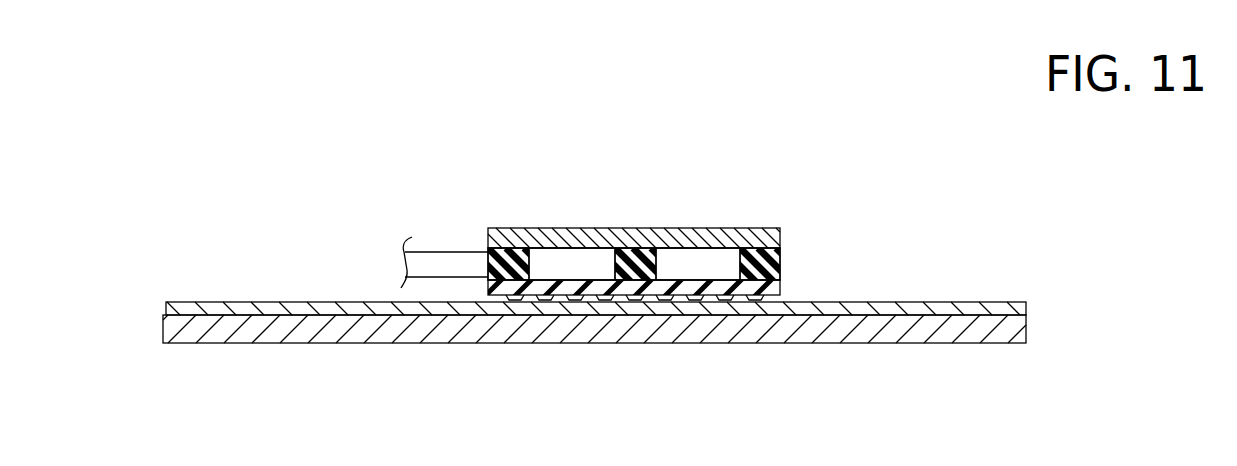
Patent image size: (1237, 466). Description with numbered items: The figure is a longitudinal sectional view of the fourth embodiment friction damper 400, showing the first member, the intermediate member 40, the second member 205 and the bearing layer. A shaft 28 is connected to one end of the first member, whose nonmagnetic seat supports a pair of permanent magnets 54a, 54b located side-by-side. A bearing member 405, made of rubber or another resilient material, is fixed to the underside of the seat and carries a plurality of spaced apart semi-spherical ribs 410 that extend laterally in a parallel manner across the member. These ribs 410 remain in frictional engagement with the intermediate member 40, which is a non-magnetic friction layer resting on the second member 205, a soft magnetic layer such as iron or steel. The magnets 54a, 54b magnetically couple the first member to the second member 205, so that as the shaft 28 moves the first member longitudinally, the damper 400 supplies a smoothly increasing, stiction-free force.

The fourth embodiment friction damper 400 is at (685, 158).
The permanent magnet 54a is at (590, 263).
The permanent magnet 54b is at (715, 265).
The shaft 28 is at (445, 263).
The intermediate member 40 is at (258, 307).
The bearing member 405 is at (781, 292).
The semi-spherical ribs 410 is at (608, 310).
The second member 205 is at (693, 343).